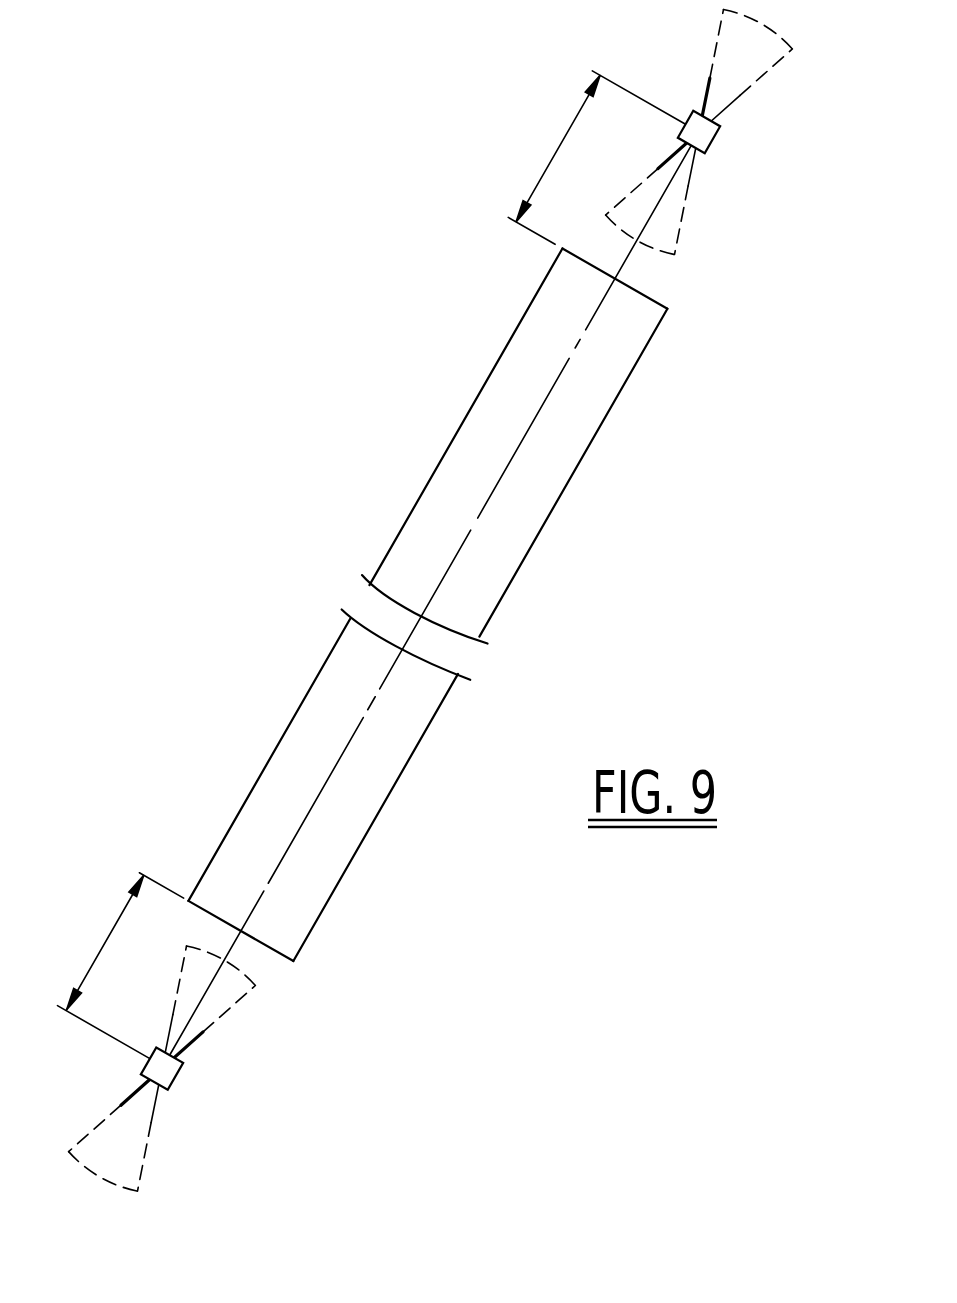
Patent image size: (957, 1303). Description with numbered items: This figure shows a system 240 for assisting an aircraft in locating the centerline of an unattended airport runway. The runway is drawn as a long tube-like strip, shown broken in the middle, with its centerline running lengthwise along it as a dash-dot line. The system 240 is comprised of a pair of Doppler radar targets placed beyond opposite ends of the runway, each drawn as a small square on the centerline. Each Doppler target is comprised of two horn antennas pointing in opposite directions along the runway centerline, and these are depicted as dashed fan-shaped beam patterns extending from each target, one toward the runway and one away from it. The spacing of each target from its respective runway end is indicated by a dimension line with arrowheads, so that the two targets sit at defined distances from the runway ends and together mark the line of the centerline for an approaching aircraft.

The system 240 is at (418, 607).